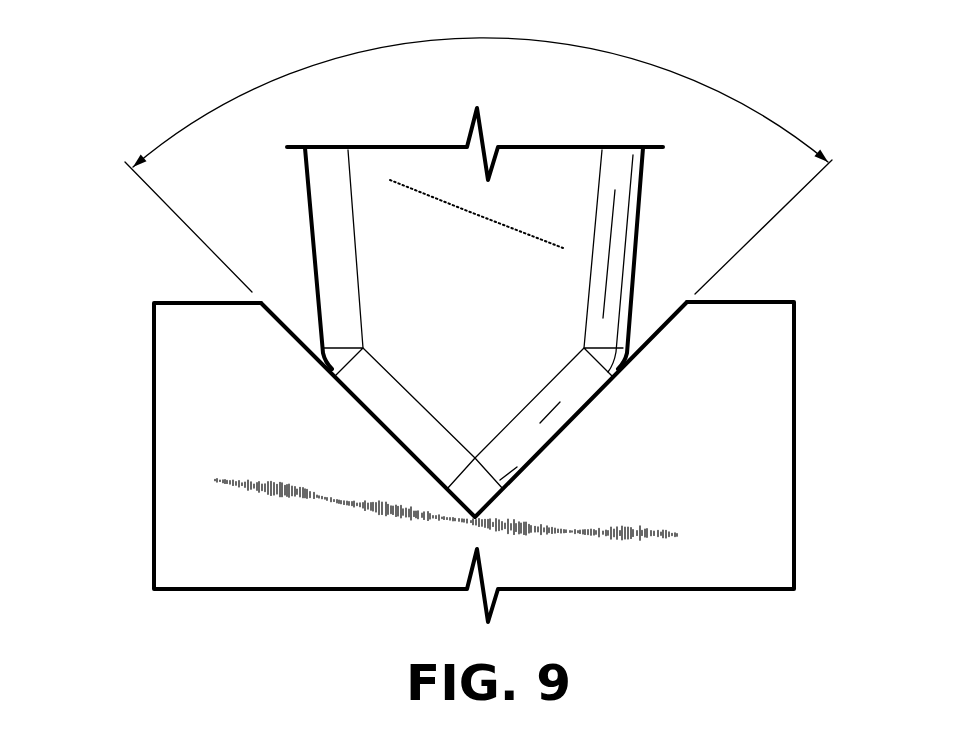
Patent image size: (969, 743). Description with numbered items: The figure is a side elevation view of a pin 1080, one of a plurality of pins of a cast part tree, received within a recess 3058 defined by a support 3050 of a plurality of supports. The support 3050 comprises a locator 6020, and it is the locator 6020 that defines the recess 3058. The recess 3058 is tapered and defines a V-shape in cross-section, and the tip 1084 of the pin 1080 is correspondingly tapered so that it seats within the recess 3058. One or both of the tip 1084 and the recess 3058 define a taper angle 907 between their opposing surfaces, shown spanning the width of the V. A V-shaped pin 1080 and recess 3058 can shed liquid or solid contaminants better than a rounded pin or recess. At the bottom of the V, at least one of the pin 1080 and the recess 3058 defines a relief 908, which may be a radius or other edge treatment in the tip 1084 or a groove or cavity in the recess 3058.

The taper angle 907 is at (182, 130).
The recess 3058 is at (666, 323).
The support 3050 is at (543, 460).
The locator 6020 is at (795, 405).
The pin 1080 is at (345, 298).
The tip 1084 is at (385, 400).
The relief 908 is at (477, 506).